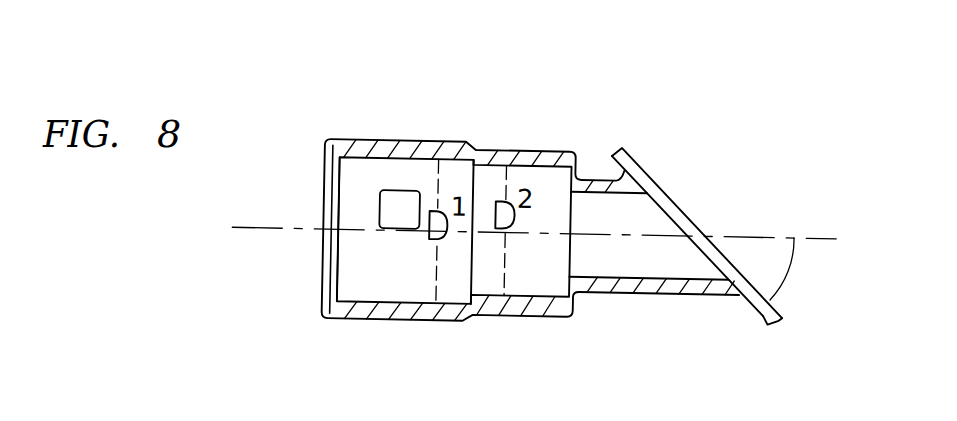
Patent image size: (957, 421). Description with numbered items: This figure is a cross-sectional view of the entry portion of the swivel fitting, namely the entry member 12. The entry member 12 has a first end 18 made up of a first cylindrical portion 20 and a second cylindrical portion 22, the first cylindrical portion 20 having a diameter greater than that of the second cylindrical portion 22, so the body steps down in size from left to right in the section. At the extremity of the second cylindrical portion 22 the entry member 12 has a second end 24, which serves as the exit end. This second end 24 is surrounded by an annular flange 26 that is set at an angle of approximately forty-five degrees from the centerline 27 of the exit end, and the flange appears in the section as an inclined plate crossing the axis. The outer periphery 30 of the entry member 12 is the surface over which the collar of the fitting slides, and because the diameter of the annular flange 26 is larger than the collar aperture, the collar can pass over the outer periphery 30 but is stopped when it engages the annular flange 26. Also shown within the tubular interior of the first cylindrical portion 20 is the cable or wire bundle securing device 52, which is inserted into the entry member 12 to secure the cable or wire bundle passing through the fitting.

The entry member 12 is at (513, 112).
The first end 18 is at (308, 288).
The first cylindrical portion 20 is at (405, 176).
The second cylindrical portion 22 is at (541, 178).
The second end 24 is at (705, 192).
The annular flange 26 is at (764, 322).
The centerline 27 is at (751, 237).
The outer periphery 30 is at (420, 322).
The cable or wire bundle securing device 52 is at (382, 208).